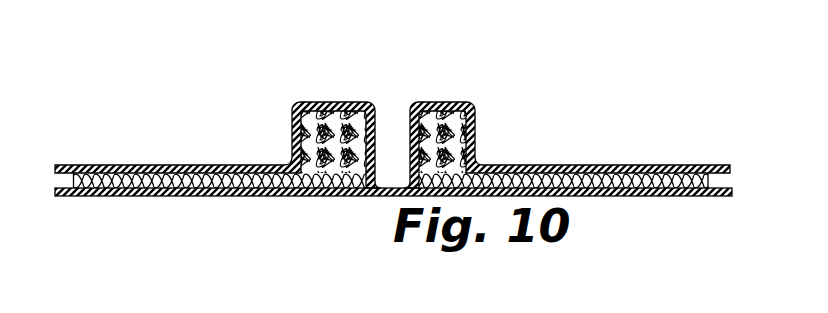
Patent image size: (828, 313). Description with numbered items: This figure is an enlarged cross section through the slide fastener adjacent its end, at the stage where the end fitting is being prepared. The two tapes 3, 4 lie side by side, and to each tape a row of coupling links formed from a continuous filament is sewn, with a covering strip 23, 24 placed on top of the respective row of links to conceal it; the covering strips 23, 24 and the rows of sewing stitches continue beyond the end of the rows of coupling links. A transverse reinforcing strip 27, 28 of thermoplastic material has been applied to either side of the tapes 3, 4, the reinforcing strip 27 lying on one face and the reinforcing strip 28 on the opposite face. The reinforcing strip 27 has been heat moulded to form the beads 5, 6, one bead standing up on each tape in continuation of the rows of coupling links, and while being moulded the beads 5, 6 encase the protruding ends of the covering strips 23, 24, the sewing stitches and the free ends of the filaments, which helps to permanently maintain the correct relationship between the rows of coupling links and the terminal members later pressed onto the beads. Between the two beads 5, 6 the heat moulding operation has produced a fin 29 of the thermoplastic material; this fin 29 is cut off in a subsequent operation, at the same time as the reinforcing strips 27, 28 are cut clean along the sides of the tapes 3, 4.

The tape 3 is at (145, 191).
The tape 4 is at (588, 193).
The bead 5 is at (292, 136).
The bead 6 is at (467, 125).
The covering strip 23 is at (331, 114).
The covering strip 24 is at (437, 112).
The transverse reinforcing strip 27 is at (190, 165).
The transverse reinforcing strip 28 is at (210, 193).
The fin 29 is at (394, 180).